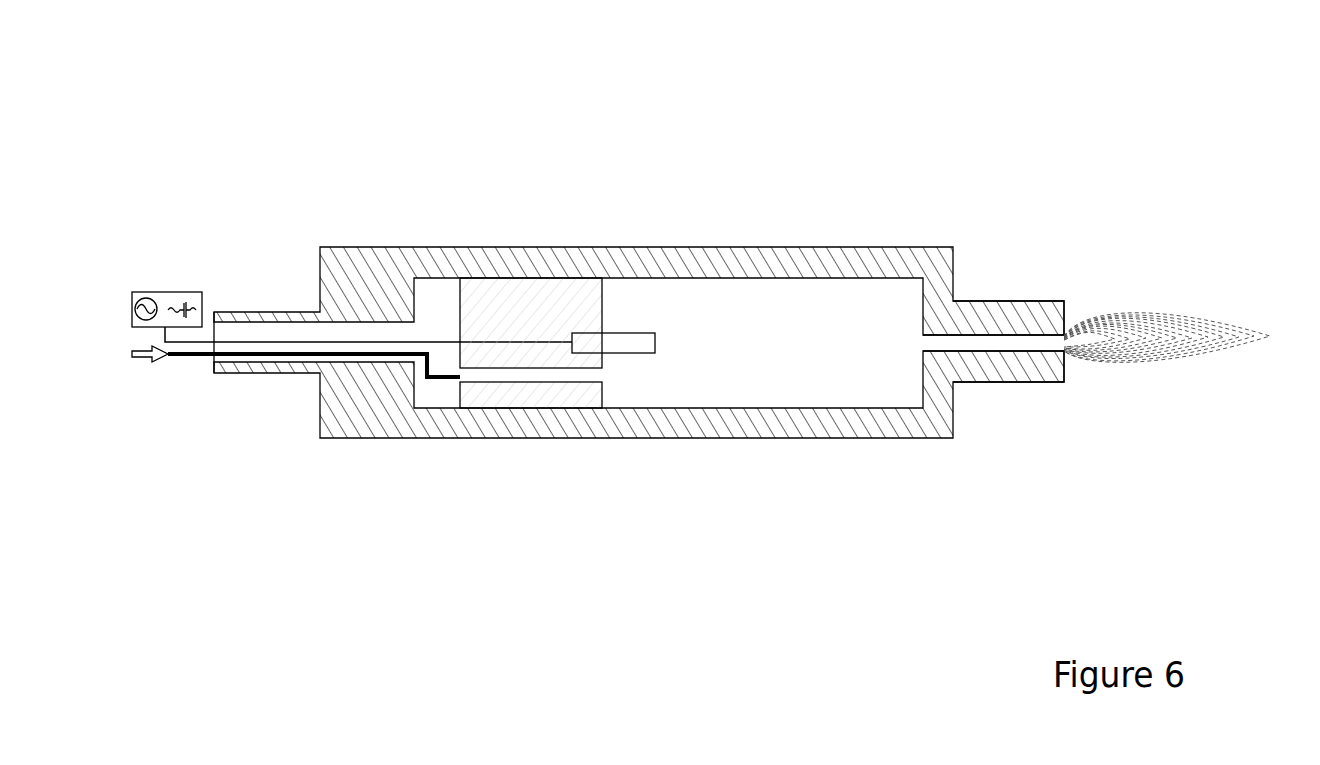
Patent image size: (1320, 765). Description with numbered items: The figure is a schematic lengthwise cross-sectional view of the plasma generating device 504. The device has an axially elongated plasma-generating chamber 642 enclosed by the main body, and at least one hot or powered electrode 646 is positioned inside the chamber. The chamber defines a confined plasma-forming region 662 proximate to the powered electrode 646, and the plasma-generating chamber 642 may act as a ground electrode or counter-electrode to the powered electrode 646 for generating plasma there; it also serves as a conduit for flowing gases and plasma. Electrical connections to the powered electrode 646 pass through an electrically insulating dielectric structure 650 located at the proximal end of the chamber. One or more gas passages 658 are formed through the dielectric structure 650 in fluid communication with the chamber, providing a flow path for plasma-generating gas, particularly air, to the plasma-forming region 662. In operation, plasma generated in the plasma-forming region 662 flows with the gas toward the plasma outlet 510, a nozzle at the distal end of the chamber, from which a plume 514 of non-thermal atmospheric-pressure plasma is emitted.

The plasma generating device 504 is at (323, 138).
The plasma-generating chamber 642 is at (848, 247).
The dielectric structure 650 is at (520, 278).
The powered electrode 646 is at (648, 333).
The gas passages 658 is at (502, 382).
The plasma-forming region 662 is at (699, 371).
The plasma outlet 510 is at (1023, 300).
The plume 514 is at (1182, 310).